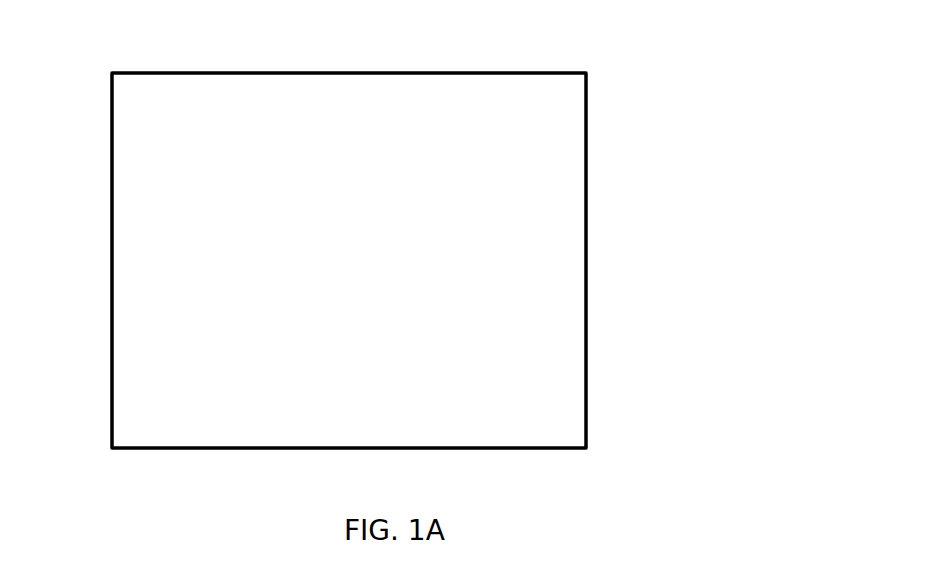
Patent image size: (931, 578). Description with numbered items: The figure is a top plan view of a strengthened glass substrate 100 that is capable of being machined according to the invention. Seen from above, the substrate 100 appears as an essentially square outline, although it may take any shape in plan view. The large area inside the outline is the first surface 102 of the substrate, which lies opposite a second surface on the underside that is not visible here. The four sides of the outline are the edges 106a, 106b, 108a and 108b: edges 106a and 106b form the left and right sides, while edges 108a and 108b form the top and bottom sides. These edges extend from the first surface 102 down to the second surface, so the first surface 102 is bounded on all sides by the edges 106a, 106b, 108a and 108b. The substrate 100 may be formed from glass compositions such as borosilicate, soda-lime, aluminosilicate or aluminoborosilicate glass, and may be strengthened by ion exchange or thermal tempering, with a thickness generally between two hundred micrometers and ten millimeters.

The strengthened glass substrate 100 is at (408, 56).
The first surface 102 is at (438, 368).
The edge 106a is at (110, 163).
The edge 106b is at (588, 163).
The edge 108a is at (514, 69).
The edge 108b is at (519, 452).